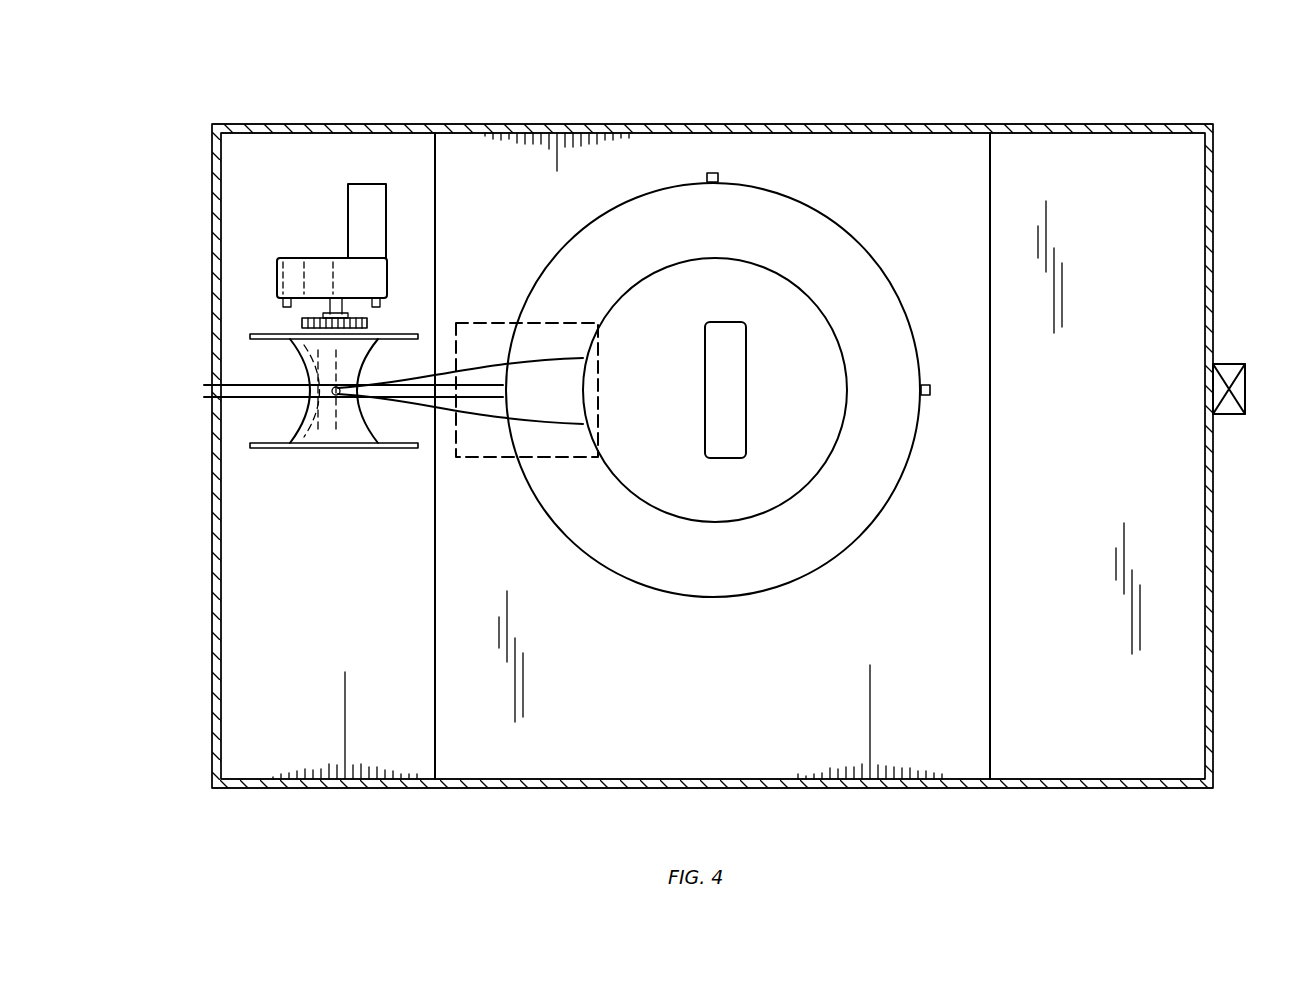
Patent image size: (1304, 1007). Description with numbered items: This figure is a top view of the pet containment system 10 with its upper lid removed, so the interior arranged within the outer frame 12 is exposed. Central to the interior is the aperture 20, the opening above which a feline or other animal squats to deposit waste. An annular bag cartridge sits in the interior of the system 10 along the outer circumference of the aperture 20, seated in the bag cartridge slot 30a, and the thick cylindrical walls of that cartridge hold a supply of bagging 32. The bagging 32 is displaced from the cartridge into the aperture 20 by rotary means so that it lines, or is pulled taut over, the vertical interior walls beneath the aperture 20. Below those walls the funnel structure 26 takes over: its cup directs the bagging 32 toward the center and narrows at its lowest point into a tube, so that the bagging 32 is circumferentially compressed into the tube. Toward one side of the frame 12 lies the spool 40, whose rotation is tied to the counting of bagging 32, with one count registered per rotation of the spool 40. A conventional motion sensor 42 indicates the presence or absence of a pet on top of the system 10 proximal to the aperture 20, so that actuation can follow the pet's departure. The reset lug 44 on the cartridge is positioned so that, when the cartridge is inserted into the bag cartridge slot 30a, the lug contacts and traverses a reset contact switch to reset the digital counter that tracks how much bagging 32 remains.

The system 10 is at (532, 98).
The frame 12 is at (216, 583).
The aperture 20 is at (715, 390).
The funnel structure 26 is at (741, 345).
The bag cartridge slot 30a is at (841, 517).
The bagging 32 is at (490, 422).
The spool 40 is at (310, 236).
The motion sensor 42 is at (1230, 416).
The reset lug 44 is at (720, 176).